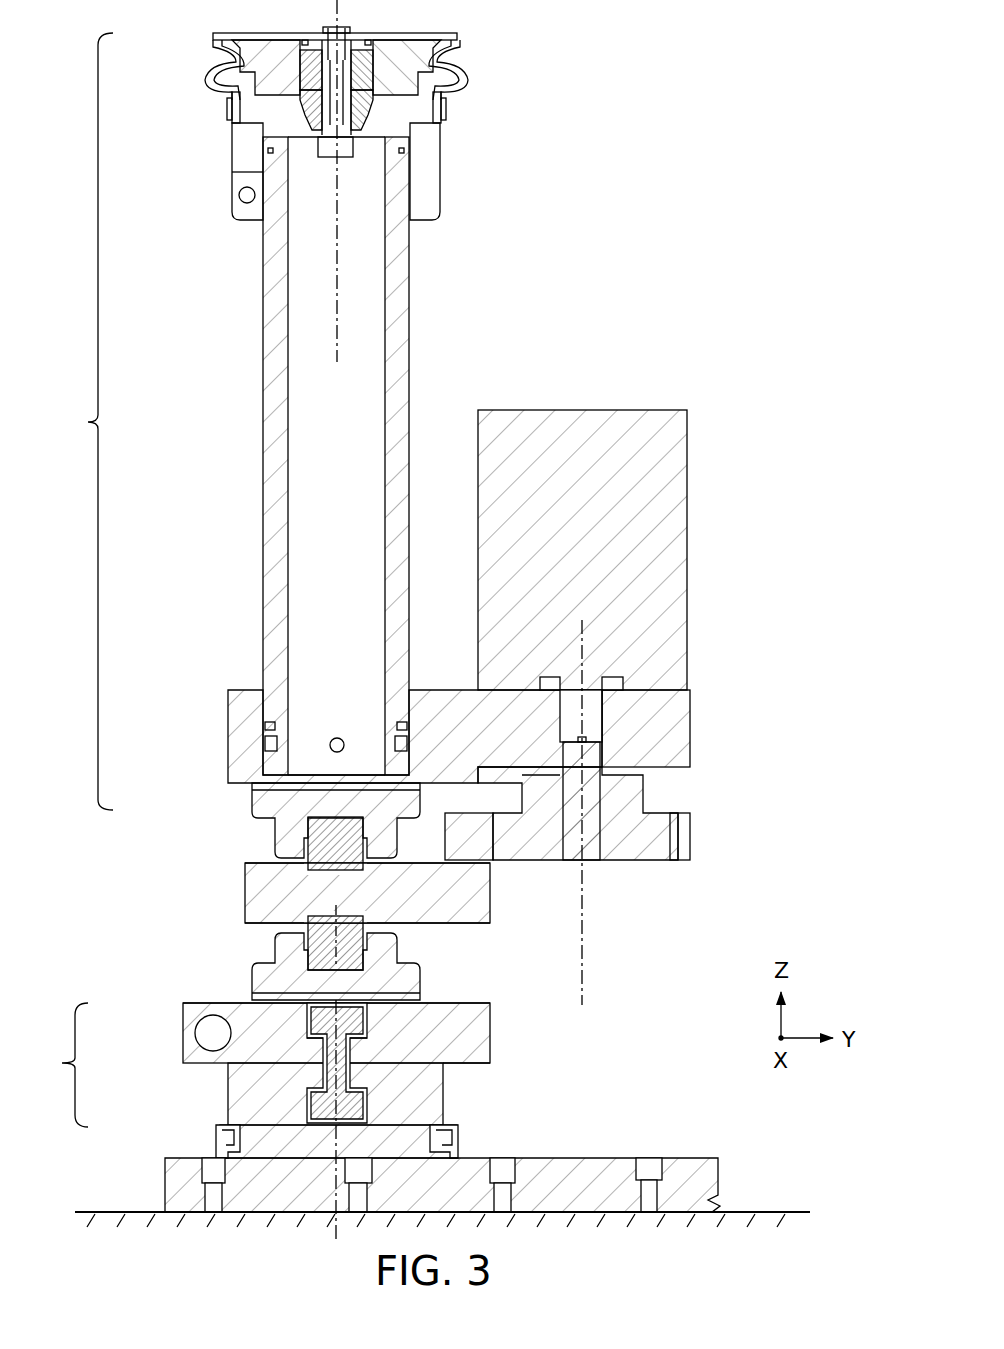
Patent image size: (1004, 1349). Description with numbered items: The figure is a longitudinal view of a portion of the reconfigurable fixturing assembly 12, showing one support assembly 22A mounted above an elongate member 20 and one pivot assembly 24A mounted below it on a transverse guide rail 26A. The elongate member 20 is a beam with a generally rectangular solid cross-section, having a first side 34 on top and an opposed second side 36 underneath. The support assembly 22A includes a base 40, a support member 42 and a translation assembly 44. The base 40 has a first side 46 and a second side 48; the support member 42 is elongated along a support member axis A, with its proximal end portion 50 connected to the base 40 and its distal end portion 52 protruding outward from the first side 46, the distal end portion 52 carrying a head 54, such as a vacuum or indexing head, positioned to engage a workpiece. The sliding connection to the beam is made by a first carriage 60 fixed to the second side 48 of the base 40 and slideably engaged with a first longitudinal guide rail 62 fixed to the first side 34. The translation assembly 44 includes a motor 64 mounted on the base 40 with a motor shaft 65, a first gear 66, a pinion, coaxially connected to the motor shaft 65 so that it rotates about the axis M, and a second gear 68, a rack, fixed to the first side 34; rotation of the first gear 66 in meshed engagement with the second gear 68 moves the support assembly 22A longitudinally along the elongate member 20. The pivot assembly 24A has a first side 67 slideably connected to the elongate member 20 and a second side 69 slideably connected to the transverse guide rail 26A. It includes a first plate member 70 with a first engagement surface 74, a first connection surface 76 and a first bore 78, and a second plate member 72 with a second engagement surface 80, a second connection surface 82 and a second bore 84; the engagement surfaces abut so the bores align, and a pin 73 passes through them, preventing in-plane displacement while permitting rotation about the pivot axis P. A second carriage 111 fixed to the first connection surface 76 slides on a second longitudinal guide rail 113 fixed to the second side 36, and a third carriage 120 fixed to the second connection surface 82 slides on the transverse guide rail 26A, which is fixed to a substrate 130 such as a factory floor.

The reconfigurable fixturing assembly 12 is at (717, 158).
The elongate member 20 is at (245, 905).
The support assembly 22A is at (71, 421).
The pivot assembly 24A is at (49, 1065).
The transverse guide rail 26A is at (608, 1160).
The first side 34 is at (258, 860).
The second side 36 is at (258, 935).
The base 40 is at (688, 737).
The support member 42 is at (268, 347).
The translation assembly 44 is at (728, 398).
The first side 46 is at (445, 690).
The second side 48 is at (447, 785).
The proximal end portion 50 is at (247, 678).
The distal end portion 52 is at (214, 185).
The head 54 is at (338, 1).
The first carriage 60 is at (258, 800).
The first longitudinal guide rail 62 is at (326, 862).
The motor 64 is at (682, 462).
The motor shaft 65 is at (592, 783).
The first gear 66 is at (650, 855).
The first side 67 is at (172, 992).
The second gear 68 is at (482, 852).
The second side 69 is at (185, 1120).
The first plate member 70 is at (482, 1040).
The second plate member 72 is at (432, 1108).
The pin 73 is at (352, 1050).
The first engagement surface 74 is at (485, 1065).
The first connection surface 76 is at (489, 1003).
The first bore 78 is at (318, 1050).
The second engagement surface 80 is at (222, 1065).
The second connection surface 82 is at (428, 1135).
The second bore 84 is at (355, 1078).
The second carriage 111 is at (415, 990).
The second longitudinal guide rail 113 is at (365, 918).
The third carriage 120 is at (238, 1148).
The substrate 130 is at (757, 1212).
The support member axis A is at (337, 350).
The axis M is at (582, 1003).
The pivot axis P is at (336, 1236).